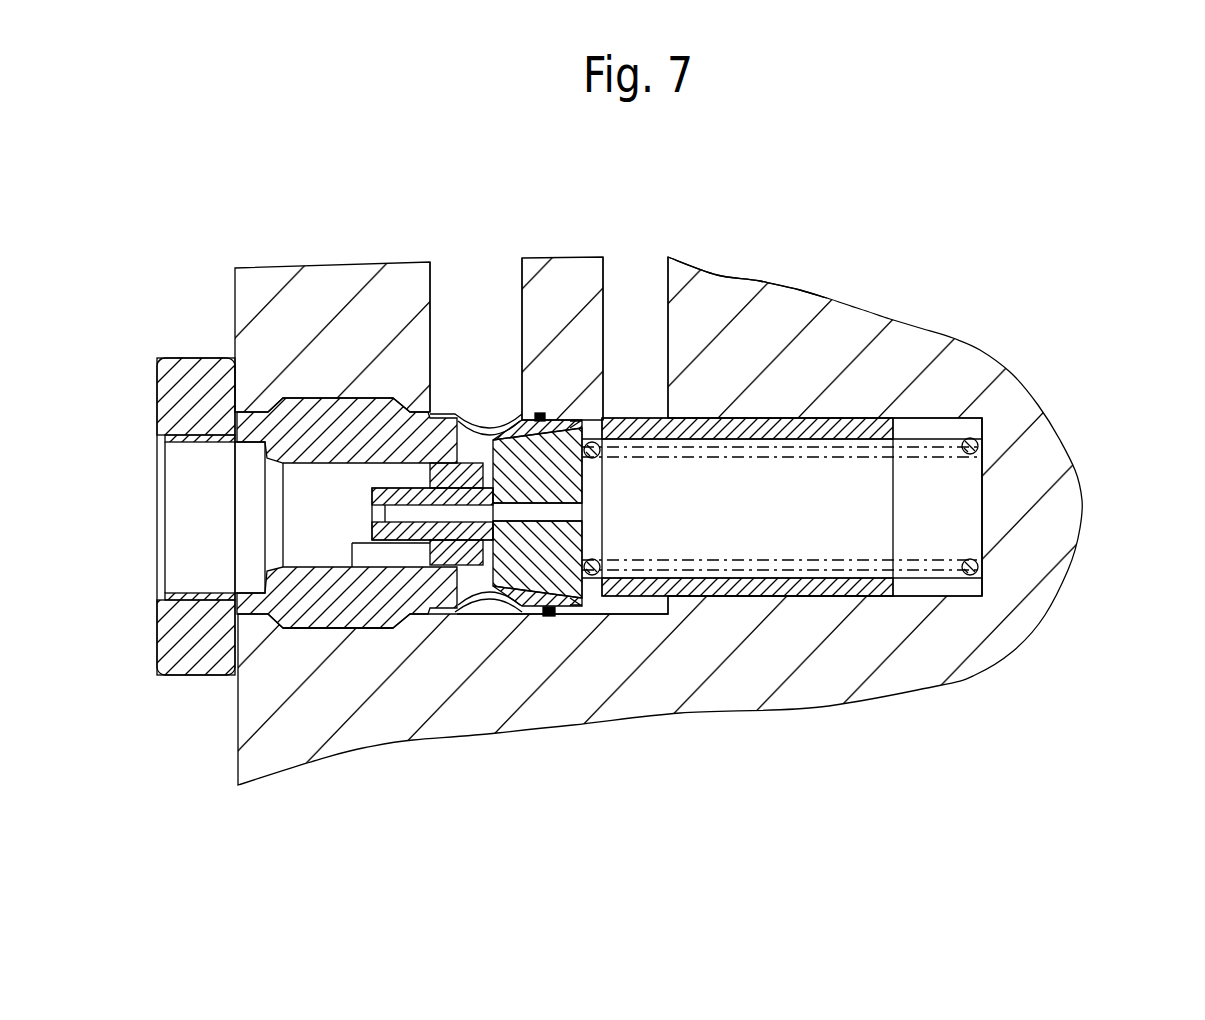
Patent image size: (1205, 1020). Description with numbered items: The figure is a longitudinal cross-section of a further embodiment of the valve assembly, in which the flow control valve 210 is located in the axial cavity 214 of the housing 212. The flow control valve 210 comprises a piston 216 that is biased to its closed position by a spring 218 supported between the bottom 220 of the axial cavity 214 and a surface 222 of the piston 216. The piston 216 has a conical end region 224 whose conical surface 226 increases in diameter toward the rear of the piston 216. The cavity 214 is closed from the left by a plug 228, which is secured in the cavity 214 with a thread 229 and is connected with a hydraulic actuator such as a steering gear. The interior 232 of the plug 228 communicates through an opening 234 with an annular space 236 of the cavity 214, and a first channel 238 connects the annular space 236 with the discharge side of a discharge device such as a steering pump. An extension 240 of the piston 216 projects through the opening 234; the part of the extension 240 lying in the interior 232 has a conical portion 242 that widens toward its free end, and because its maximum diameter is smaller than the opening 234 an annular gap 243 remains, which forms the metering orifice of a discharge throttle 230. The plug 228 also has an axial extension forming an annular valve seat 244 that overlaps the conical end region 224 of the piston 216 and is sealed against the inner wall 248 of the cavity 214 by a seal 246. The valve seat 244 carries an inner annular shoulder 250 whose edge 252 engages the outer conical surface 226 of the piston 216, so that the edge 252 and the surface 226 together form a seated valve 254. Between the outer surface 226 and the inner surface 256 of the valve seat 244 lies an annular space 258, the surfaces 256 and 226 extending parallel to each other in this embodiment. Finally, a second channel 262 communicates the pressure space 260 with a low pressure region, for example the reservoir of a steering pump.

The flow control valve 210 is at (877, 270).
The housing 212 is at (907, 353).
The axial cavity 214 is at (857, 517).
The piston 216 is at (847, 593).
The spring 218 is at (985, 445).
The bottom of the axial cavity 220 is at (982, 527).
The surface of the piston 222 is at (707, 598).
The conical end region 224 is at (510, 600).
The conical surface 226 is at (584, 520).
The plug 228 is at (192, 383).
The thread 229 is at (320, 405).
The discharge throttle 230 is at (300, 645).
The interior of the plug 232 is at (210, 543).
The opening 234 is at (440, 580).
The annular space 236 is at (477, 580).
The first channel 238 is at (456, 287).
The extension of the piston 240 is at (423, 543).
The stem 242 is at (368, 567).
The annular gap 243 is at (475, 482).
The annular valve seat 244 is at (553, 414).
The seal 246 is at (540, 412).
The inner wall of the cavity 248 is at (575, 412).
The inner annular shoulder 250 is at (562, 610).
The edge 252 is at (600, 613).
The seated valve 254 is at (748, 292).
The inner surface of the valve seat 256 is at (598, 456).
The annular space 258 is at (548, 608).
The pressure space 260 is at (692, 577).
The second channel 262 is at (662, 257).